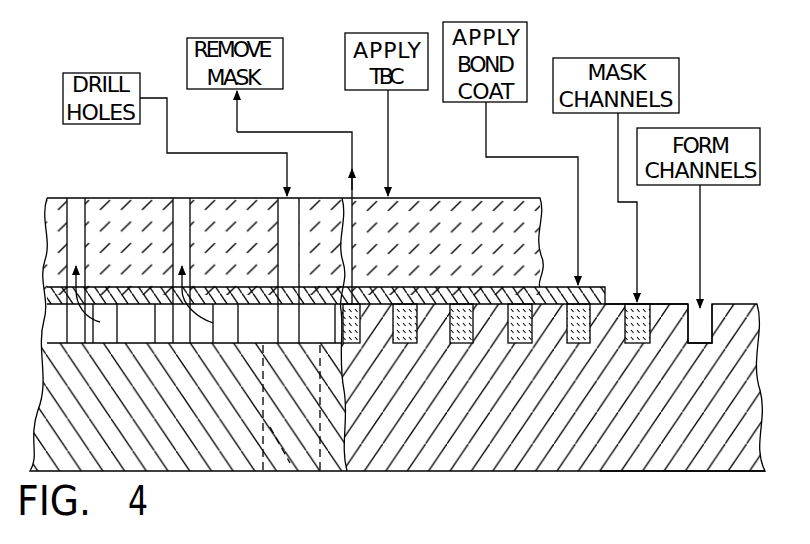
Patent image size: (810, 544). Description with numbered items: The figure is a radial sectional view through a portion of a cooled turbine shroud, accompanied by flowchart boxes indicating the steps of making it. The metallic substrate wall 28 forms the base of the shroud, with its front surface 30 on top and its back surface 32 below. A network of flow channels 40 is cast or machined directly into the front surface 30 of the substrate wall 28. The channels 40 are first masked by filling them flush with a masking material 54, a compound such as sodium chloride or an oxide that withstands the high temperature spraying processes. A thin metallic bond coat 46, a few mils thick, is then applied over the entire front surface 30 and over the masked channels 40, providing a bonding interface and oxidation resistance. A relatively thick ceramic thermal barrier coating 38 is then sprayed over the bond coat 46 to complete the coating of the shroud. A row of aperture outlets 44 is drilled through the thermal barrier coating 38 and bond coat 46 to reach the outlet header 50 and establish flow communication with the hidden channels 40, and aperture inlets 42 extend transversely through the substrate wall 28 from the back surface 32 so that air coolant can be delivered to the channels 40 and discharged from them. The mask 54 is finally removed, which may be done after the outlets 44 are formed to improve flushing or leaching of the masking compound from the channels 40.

The substrate wall 28 is at (600, 415).
The front surface 30 is at (662, 304).
The back surface 32 is at (693, 472).
The thermal barrier coating 38 is at (431, 254).
The flow channels 40 is at (713, 305).
The aperture inlets 42 is at (287, 476).
The aperture outlets 44 is at (226, 172).
The bond coat 46 is at (590, 287).
The outlet header 50 is at (80, 333).
The masking material 54 is at (515, 344).